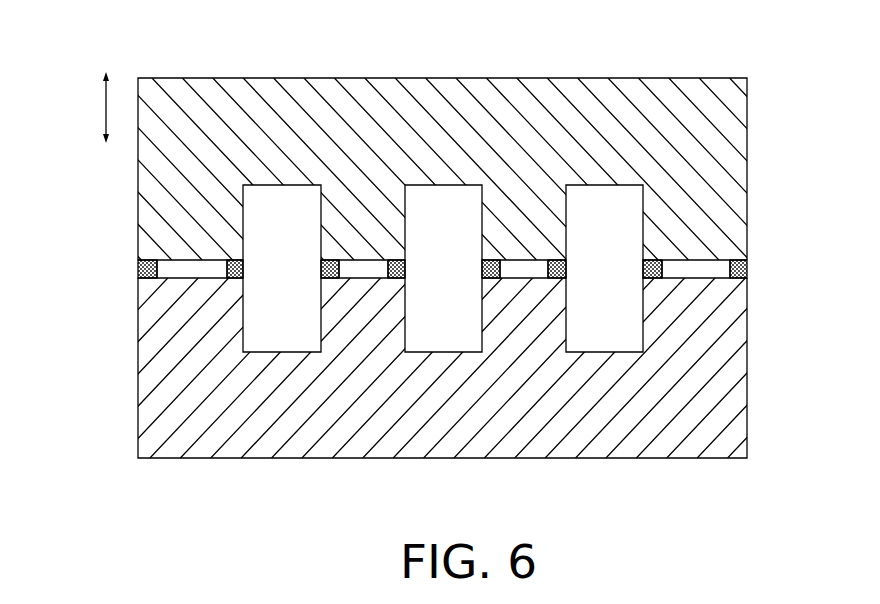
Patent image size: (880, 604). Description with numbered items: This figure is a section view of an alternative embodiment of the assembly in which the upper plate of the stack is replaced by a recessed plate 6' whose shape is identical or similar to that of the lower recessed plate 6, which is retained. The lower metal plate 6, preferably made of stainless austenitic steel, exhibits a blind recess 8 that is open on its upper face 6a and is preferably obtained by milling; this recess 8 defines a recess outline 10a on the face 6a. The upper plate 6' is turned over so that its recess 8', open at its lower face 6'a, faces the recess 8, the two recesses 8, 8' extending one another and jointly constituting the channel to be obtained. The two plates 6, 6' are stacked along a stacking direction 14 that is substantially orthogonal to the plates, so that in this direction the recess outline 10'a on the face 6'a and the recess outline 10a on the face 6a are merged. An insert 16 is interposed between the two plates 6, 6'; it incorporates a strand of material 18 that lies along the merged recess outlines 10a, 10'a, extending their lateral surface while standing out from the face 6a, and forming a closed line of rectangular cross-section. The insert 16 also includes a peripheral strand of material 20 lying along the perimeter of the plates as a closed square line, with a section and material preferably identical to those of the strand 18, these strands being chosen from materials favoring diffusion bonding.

The metal plate 6 is at (440, 368).
The recessed plate 6' is at (440, 169).
The upper face 6a is at (178, 279).
The lower face 6'a is at (401, 234).
The recess 8 is at (620, 391).
The recess 8' is at (598, 142).
The recess outline 10a is at (245, 279).
The recess outline 10'a is at (282, 222).
The stacking direction 14 is at (106, 108).
The insert 16 is at (752, 260).
The strand of material 18 is at (560, 264).
The peripheral strand of material 20 is at (138, 268).